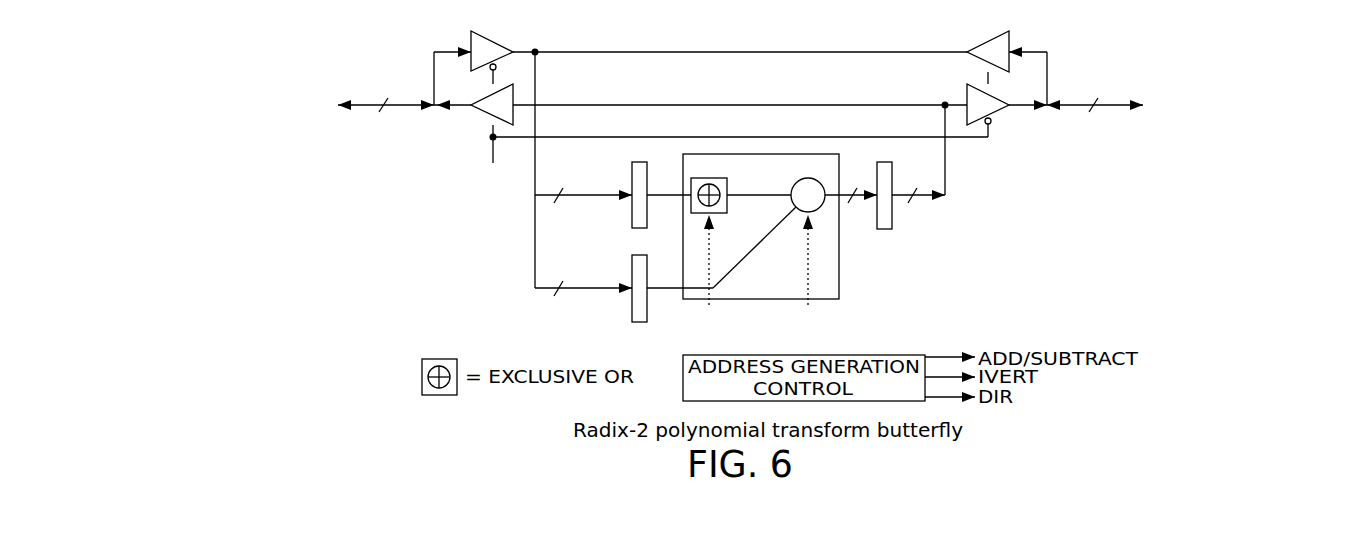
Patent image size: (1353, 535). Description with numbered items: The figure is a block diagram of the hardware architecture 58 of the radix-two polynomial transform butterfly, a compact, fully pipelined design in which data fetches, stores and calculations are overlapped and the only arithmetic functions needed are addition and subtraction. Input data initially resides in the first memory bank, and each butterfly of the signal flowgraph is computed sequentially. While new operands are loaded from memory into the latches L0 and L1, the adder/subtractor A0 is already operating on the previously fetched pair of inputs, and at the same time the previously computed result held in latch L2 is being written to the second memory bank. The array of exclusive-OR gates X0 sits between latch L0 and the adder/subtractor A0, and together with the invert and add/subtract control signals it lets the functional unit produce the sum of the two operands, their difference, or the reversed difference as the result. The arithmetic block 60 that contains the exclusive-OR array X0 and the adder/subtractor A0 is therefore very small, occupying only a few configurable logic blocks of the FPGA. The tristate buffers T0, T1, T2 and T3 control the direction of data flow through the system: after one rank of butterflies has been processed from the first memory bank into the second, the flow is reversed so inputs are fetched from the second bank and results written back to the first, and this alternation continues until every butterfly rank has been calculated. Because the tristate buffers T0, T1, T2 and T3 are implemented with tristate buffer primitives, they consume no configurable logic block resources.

The architecture 58 is at (904, 29).
The arithmetic unit (exclusive-OR and add/subtract block) 60 is at (848, 298).
The tristate buffer T0 is at (488, 62).
The tristate buffer T1 is at (488, 107).
The tristate buffer T2 is at (993, 62).
The tristate buffer T3 is at (994, 108).
The latch L0 is at (626, 193).
The latch L1 is at (626, 286).
The latch L2 is at (871, 187).
The array of exclusive-OR gates X0 is at (724, 191).
The adder/subtractor A0 is at (806, 186).